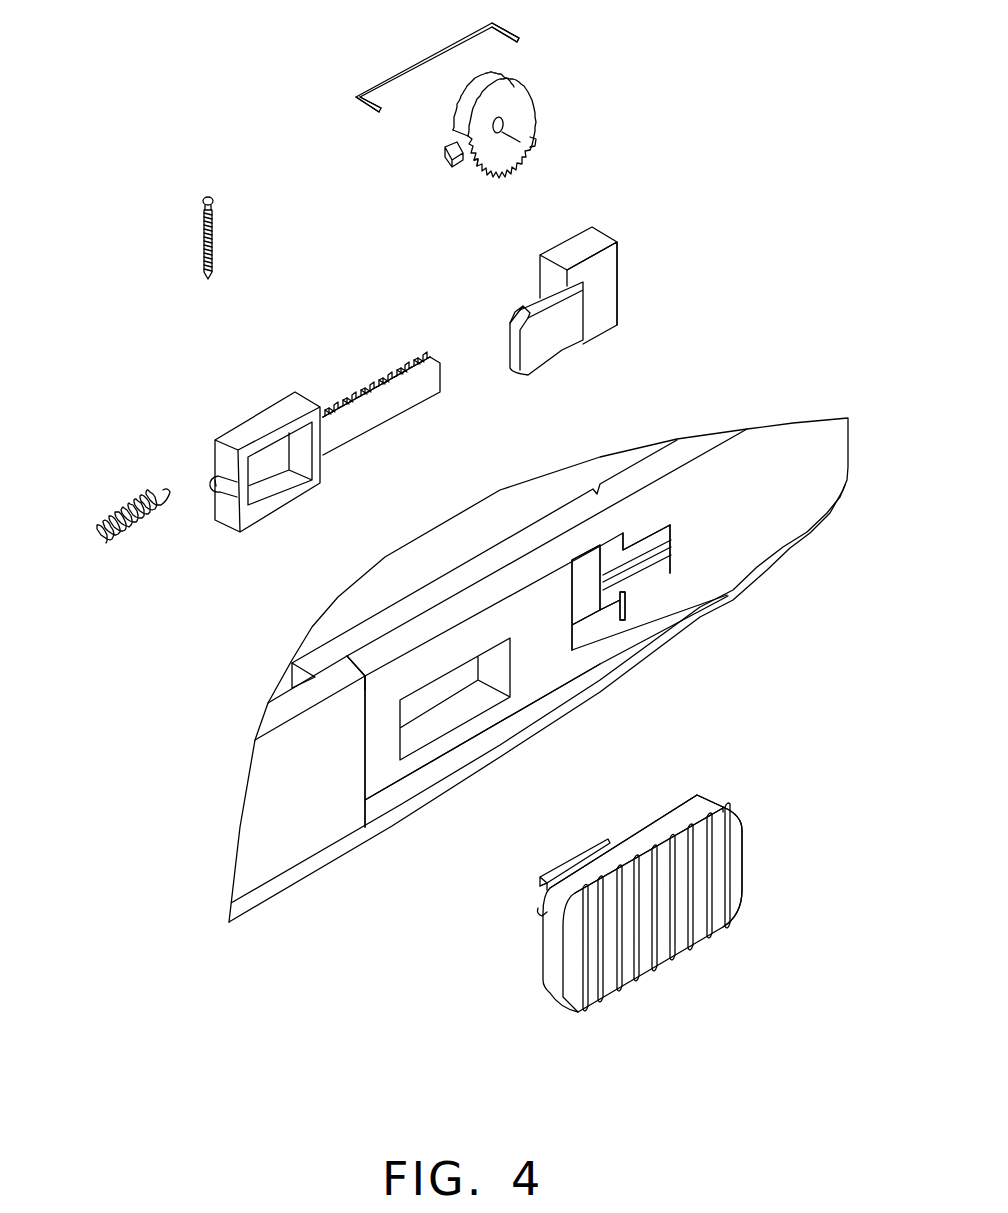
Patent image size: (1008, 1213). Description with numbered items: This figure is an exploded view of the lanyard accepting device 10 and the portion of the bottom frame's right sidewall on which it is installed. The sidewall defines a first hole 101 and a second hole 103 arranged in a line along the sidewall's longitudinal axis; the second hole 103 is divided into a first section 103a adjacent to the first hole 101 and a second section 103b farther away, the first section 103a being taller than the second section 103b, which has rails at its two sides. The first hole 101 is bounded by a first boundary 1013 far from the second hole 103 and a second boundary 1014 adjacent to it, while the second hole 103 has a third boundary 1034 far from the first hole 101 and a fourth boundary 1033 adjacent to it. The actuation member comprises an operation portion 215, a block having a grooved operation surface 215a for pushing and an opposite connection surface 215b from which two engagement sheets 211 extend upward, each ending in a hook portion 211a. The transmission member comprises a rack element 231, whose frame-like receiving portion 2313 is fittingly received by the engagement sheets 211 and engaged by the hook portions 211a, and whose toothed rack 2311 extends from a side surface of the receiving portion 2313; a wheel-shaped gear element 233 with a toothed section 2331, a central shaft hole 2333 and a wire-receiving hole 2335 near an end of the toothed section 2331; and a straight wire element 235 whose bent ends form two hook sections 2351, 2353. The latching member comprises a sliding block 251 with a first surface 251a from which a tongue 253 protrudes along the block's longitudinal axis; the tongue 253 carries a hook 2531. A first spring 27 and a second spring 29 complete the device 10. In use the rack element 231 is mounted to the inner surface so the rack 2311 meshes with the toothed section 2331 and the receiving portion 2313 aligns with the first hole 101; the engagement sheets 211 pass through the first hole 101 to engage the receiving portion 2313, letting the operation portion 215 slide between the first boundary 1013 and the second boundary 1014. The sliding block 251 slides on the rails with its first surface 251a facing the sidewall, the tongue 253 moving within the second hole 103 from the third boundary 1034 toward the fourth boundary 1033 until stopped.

The housing 10 is at (778, 470).
The first hole 101 is at (477, 700).
The first boundary 1013 is at (397, 722).
The second boundary 1014 is at (513, 667).
The second hole 103 is at (754, 688).
The fourth boundary 1033 is at (580, 570).
The third boundary 1034 is at (660, 568).
The first section 103a is at (607, 613).
The second section 103b is at (650, 585).
The first spring 27 is at (120, 500).
The second spring 29 is at (215, 231).
The rack element 231 is at (400, 413).
The toothed rack 2311 is at (360, 400).
The receiving portion 2313 is at (258, 427).
The gear element 233 is at (520, 108).
The toothed section 2331 is at (448, 163).
The shaft hole 2333 is at (537, 142).
The wire-receiving hole 2335 is at (485, 182).
The wire element 235 is at (412, 62).
The hook section 2351 is at (366, 103).
The hook section 2353 is at (513, 30).
The sliding block 251 is at (613, 283).
The first surface 251a is at (615, 248).
The tongue 253 is at (577, 350).
The hook 2531 is at (515, 310).
The engagement sheets 211 is at (540, 910).
The hook portion 211a is at (548, 873).
The operation portion 215 is at (663, 897).
The operation surface 215a is at (732, 878).
The connection surface 215b is at (640, 830).